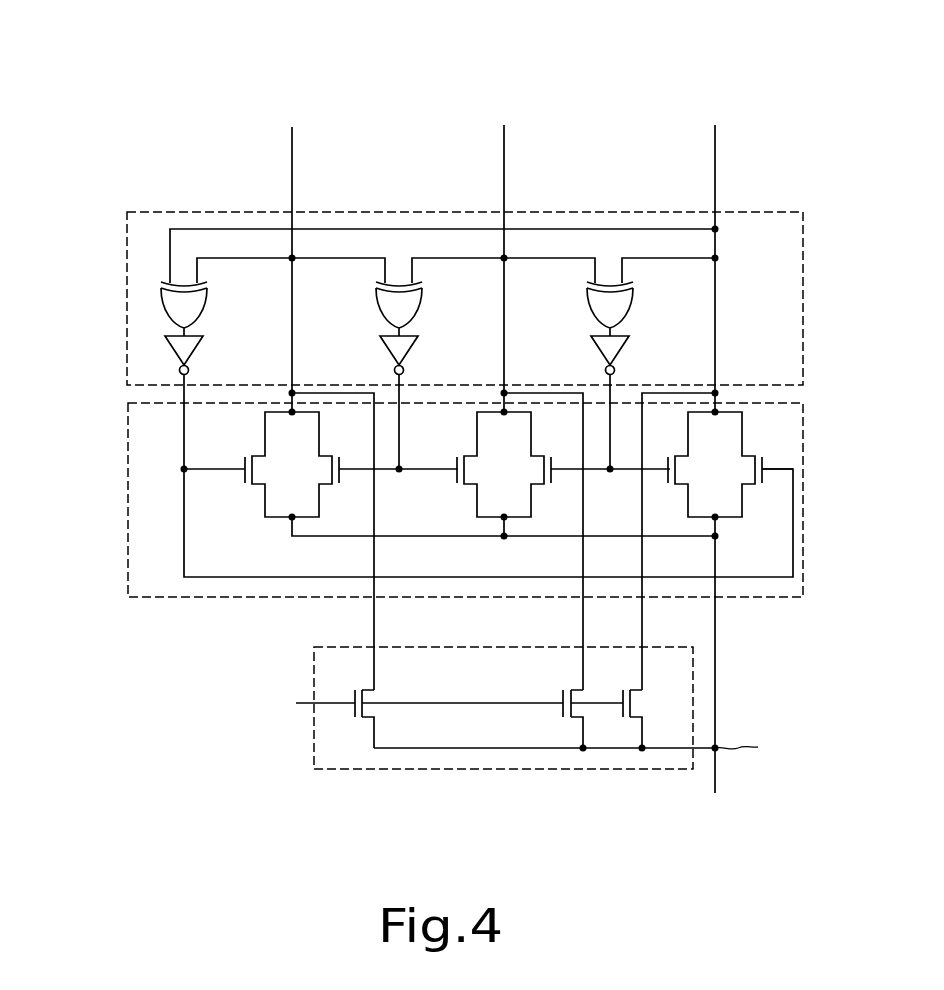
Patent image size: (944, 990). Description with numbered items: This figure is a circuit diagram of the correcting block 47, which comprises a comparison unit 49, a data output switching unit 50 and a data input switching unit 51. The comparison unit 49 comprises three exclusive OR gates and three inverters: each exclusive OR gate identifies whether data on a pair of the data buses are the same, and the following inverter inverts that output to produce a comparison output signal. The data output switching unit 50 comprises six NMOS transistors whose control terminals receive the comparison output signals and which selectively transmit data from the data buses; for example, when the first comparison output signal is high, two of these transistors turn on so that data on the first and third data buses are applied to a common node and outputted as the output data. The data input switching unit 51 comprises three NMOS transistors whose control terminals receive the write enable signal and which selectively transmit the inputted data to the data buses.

The correcting block 47 is at (744, 79).
The comparison unit 49 is at (127, 299).
The data output switching unit 50 is at (128, 500).
The data input switching unit 51 is at (314, 668).